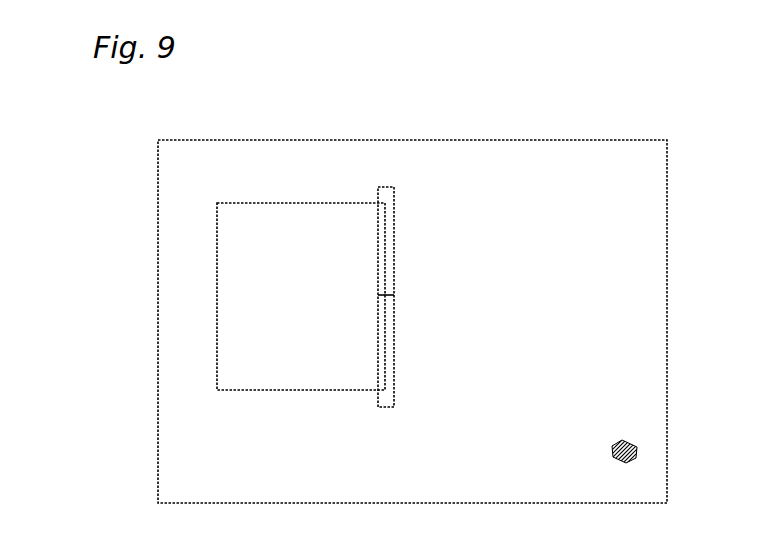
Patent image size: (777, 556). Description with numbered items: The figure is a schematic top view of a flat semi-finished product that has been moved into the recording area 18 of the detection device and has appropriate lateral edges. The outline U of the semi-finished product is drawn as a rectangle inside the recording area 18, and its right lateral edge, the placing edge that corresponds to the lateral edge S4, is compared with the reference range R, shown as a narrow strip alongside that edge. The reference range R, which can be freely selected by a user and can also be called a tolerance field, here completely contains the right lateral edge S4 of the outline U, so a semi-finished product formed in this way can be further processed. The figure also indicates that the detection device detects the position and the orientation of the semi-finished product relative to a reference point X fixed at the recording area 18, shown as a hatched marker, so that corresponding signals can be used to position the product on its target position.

The recording area 18 is at (603, 138).
The outline U is at (301, 202).
The reference range R is at (393, 230).
The lateral edge S4 is at (392, 295).
The reference point X is at (633, 447).